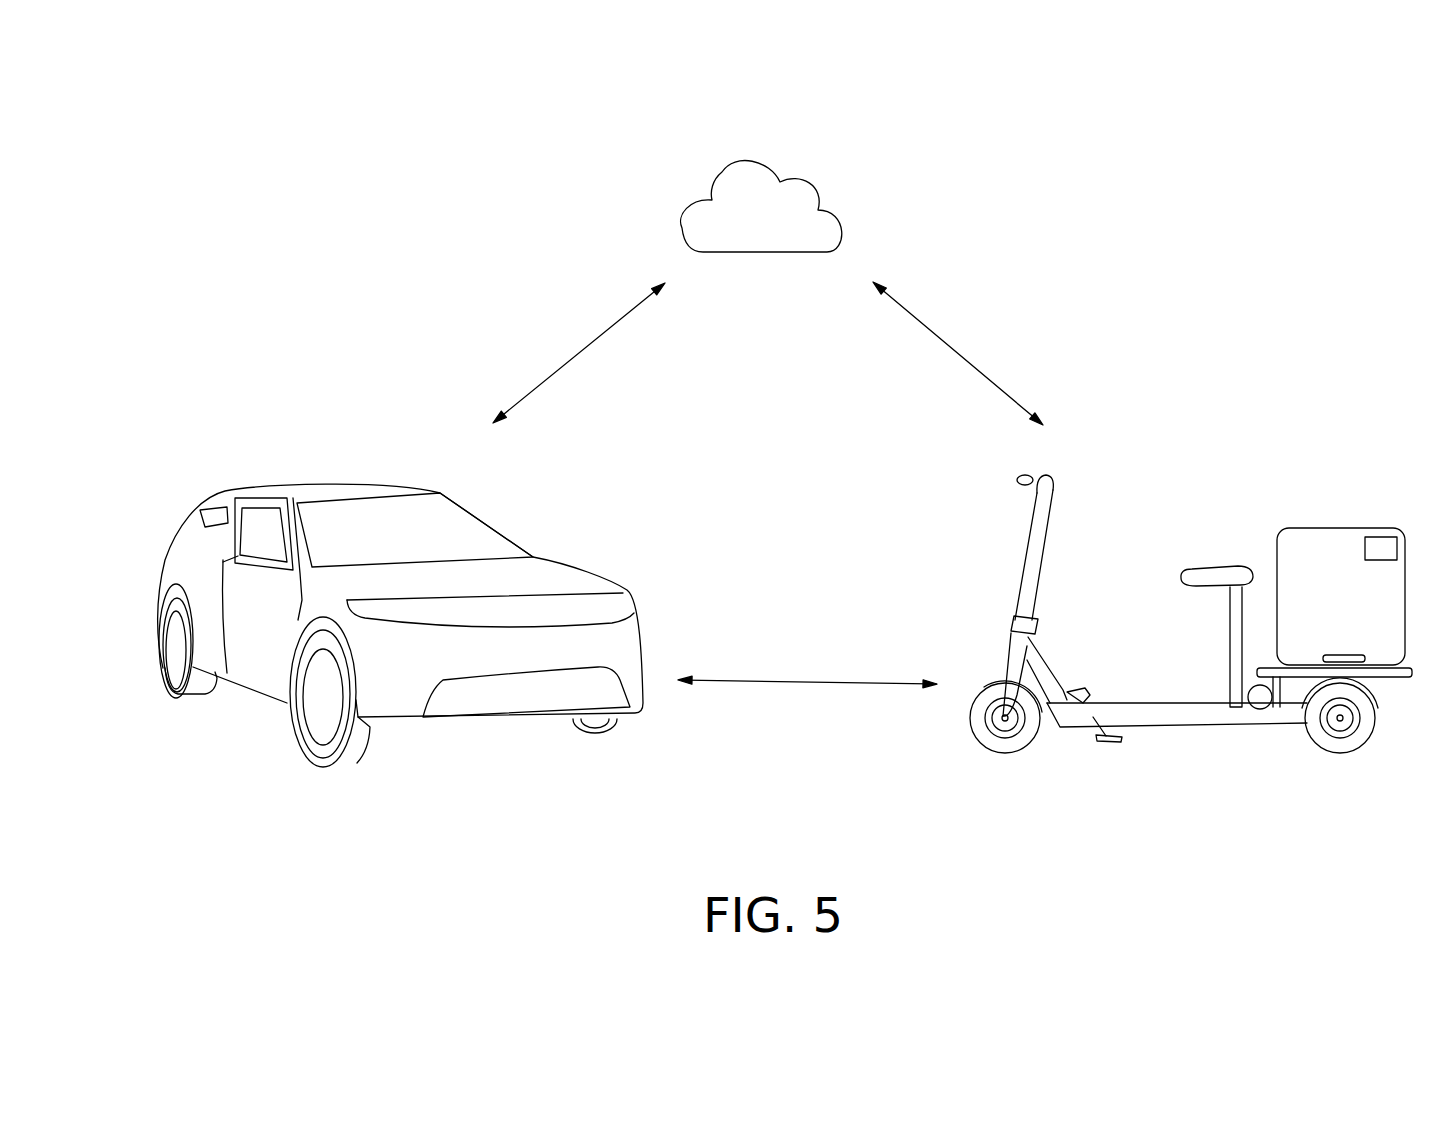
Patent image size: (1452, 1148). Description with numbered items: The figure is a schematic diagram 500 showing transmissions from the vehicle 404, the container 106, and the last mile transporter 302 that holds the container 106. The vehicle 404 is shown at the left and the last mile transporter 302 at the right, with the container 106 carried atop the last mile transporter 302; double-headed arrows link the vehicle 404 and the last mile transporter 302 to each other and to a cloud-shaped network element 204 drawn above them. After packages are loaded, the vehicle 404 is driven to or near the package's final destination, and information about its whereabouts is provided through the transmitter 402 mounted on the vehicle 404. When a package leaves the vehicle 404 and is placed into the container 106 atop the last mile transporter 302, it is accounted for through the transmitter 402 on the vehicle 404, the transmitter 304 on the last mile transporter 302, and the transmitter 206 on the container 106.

The schematic diagram 500 is at (381, 144).
The remote server / cloud network 204 is at (835, 232).
The transmitter 402 is at (218, 510).
The vehicle 404 is at (560, 570).
The last mile transporter 302 is at (1030, 543).
The transmitter 304 is at (1262, 697).
The container 106 is at (1313, 543).
The transmitter 206 is at (1378, 550).